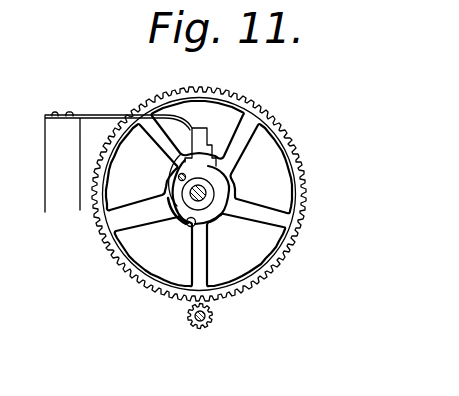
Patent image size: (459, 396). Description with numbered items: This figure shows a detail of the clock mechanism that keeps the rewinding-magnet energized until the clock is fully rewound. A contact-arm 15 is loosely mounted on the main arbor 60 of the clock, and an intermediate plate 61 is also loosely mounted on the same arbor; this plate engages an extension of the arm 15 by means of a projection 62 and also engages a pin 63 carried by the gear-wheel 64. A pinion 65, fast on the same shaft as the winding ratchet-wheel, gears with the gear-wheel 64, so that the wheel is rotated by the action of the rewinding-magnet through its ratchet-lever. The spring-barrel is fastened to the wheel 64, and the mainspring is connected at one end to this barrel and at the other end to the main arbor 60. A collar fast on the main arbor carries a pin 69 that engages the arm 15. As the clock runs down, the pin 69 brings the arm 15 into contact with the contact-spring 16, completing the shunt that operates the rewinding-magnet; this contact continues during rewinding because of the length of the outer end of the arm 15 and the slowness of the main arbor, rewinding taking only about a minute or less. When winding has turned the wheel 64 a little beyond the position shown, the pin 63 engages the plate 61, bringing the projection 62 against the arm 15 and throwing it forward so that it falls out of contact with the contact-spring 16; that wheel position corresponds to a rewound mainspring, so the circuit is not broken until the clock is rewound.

The contact-arm 15 is at (210, 156).
The contact-spring 16 is at (118, 153).
The main arbor 60 is at (208, 191).
The intermediate plate 61 is at (175, 215).
The projection 62 is at (180, 160).
The pin 63 is at (189, 227).
The gear-wheel 64 is at (210, 194).
The pinion 65 is at (212, 322).
The pin 69 is at (178, 180).